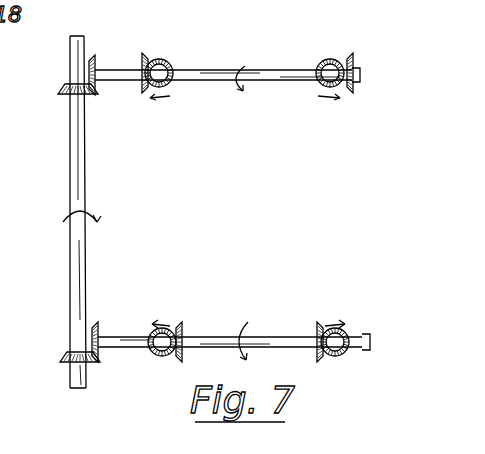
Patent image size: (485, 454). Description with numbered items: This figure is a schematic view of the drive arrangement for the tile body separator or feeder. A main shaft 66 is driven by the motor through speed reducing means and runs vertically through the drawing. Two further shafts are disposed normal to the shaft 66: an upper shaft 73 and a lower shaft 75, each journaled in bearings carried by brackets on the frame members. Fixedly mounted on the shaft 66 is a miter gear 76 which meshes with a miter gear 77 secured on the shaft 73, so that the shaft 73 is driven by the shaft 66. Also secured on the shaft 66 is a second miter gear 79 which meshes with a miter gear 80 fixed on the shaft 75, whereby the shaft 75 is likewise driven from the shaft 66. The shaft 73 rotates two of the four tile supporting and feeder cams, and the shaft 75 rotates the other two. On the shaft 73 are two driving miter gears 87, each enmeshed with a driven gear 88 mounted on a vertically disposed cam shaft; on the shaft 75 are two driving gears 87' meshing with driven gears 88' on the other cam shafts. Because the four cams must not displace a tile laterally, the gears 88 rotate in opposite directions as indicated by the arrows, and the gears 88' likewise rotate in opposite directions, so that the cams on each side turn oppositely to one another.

The shaft 66 is at (86, 176).
The shaft 73 is at (208, 69).
The shaft 75 is at (290, 336).
The miter gear 76 is at (63, 90).
The miter gear 77 is at (90, 58).
The second miter gear 79 is at (64, 355).
The miter gear 80 is at (94, 323).
The driving miter gear 87 is at (245, 56).
The driven gear 88 is at (244, 66).
The driving gear 87' is at (250, 322).
The driven gear 88' is at (257, 321).